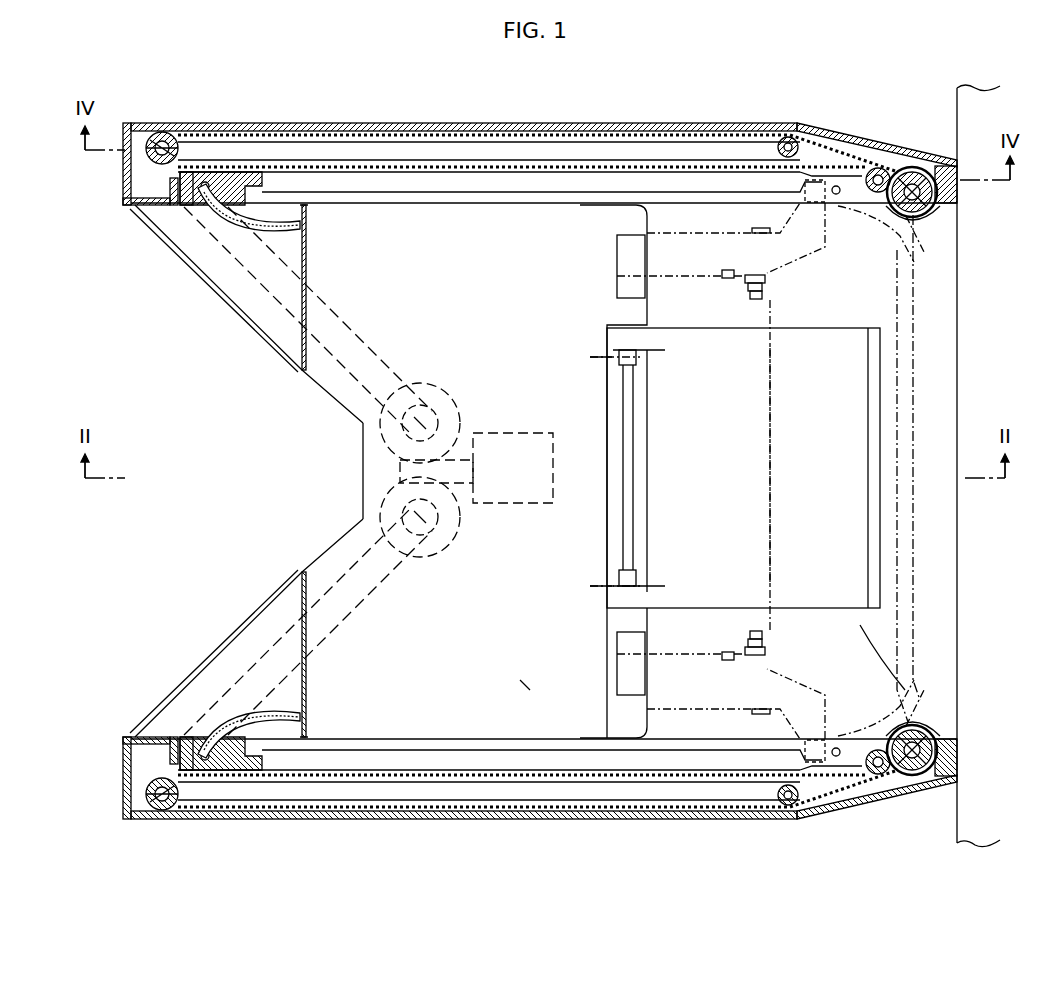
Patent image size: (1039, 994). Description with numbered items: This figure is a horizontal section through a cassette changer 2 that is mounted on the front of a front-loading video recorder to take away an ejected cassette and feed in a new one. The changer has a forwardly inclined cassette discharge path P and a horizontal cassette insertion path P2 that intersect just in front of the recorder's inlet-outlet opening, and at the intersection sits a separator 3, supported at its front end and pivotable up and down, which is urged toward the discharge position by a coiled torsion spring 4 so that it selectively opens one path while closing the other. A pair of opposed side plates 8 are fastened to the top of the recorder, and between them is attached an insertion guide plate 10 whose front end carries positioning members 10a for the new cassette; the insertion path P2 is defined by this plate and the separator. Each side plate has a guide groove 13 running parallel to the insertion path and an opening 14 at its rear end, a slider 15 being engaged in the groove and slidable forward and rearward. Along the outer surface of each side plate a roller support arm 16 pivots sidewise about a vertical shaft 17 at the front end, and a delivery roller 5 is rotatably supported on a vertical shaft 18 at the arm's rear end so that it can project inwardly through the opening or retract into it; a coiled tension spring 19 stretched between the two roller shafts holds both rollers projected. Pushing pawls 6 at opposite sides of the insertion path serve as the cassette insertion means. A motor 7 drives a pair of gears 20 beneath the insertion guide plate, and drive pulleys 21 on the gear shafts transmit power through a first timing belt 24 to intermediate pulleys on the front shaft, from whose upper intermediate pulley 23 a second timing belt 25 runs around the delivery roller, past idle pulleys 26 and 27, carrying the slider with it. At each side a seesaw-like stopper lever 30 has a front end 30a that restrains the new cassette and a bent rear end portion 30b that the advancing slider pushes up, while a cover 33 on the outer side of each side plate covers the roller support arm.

The cassette changer 2 is at (572, 404).
The separator 3 is at (800, 344).
The coiled torsion spring 4 is at (598, 354).
The delivery rollers 5 is at (912, 170).
The pushing pawls 6 is at (240, 226).
The motor 7 is at (515, 503).
The side plates 8 is at (515, 204).
The insertion guide plate 10 is at (470, 215).
The positioning members 10a is at (307, 238).
The guide groove 13 is at (432, 204).
The opening 14 is at (935, 208).
The slider 15 is at (238, 170).
The roller support arm 16 is at (640, 152).
The vertical shaft 17 is at (158, 132).
The vertical shaft 18 is at (940, 166).
The coiled tension spring 19 is at (920, 522).
The gears 20 is at (448, 390).
The drive pulleys 21 is at (440, 421).
The upper intermediate pulley 23 is at (138, 172).
The first timing belt 24 is at (342, 385).
The second timing belt 25 is at (400, 128).
The idle pulley 26 is at (880, 168).
The idle pulley 27 is at (790, 137).
The stopper lever 30 is at (688, 270).
The front end of stopper lever 30a is at (617, 268).
The rear end portion of stopper lever 30b is at (805, 196).
The cover 33 is at (560, 132).
The cassette discharge path P is at (860, 625).
The cassette insertion path P2 is at (525, 680).